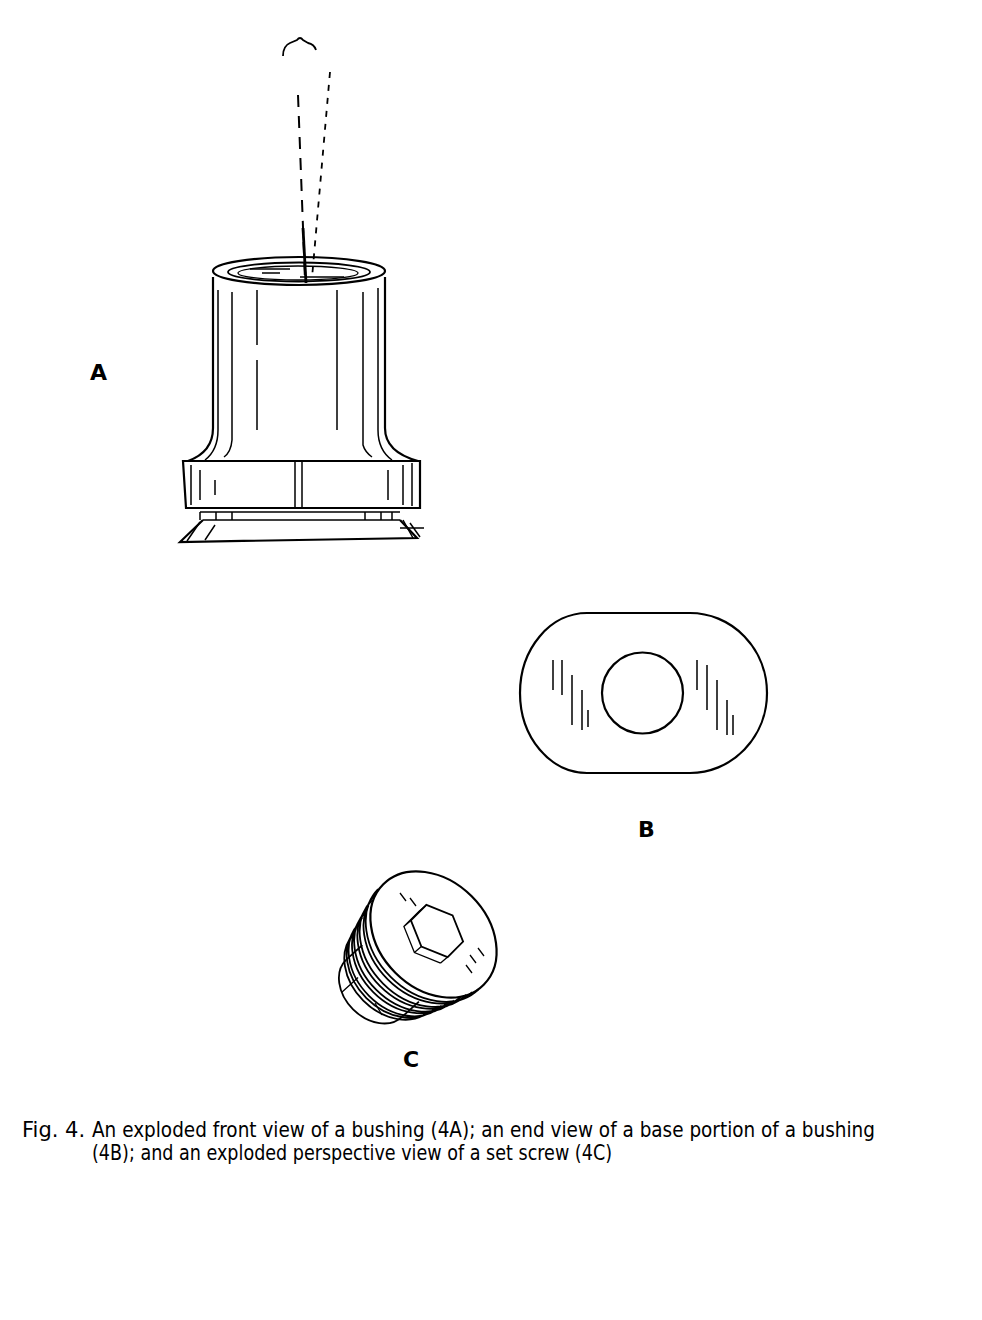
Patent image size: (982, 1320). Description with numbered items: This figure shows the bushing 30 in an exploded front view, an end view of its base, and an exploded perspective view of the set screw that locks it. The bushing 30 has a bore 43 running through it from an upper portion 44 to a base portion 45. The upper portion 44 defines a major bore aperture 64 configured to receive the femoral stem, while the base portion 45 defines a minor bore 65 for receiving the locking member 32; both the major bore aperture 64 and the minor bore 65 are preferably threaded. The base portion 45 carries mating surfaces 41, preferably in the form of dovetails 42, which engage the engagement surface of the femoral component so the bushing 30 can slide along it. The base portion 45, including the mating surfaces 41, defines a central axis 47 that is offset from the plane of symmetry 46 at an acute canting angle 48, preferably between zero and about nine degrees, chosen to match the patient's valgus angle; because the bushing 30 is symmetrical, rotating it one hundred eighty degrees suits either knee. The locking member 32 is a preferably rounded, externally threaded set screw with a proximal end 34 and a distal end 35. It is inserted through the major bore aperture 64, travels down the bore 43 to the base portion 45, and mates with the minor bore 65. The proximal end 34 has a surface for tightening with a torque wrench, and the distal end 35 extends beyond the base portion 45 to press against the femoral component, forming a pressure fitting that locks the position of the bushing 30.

In FIG. 4A, the bushing 30 is at (434, 303).
In FIG. 4A, the mating surfaces 41 is at (400, 510).
In FIG. 4A, the dovetails 42 is at (413, 533).
In FIG. 4A, the bore 43 is at (303, 267).
In FIG. 4A, the upper portion 44 is at (355, 293).
In FIG. 4A, the base portion 45 is at (277, 540).
In FIG. 4A, the plane of symmetry 46 is at (288, 170).
In FIG. 4A, the central axis 47 is at (333, 160).
In FIG. 4A, the canting angle 48 is at (296, 29).
In FIG. 4A, the major bore aperture 64 is at (250, 262).
In FIG. 4B, the minor bore 65 is at (670, 695).
In FIG. 4C, the locking member 32 is at (505, 1013).
In FIG. 4C, the proximal end 34 is at (453, 942).
In FIG. 4C, the distal end 35 is at (347, 995).